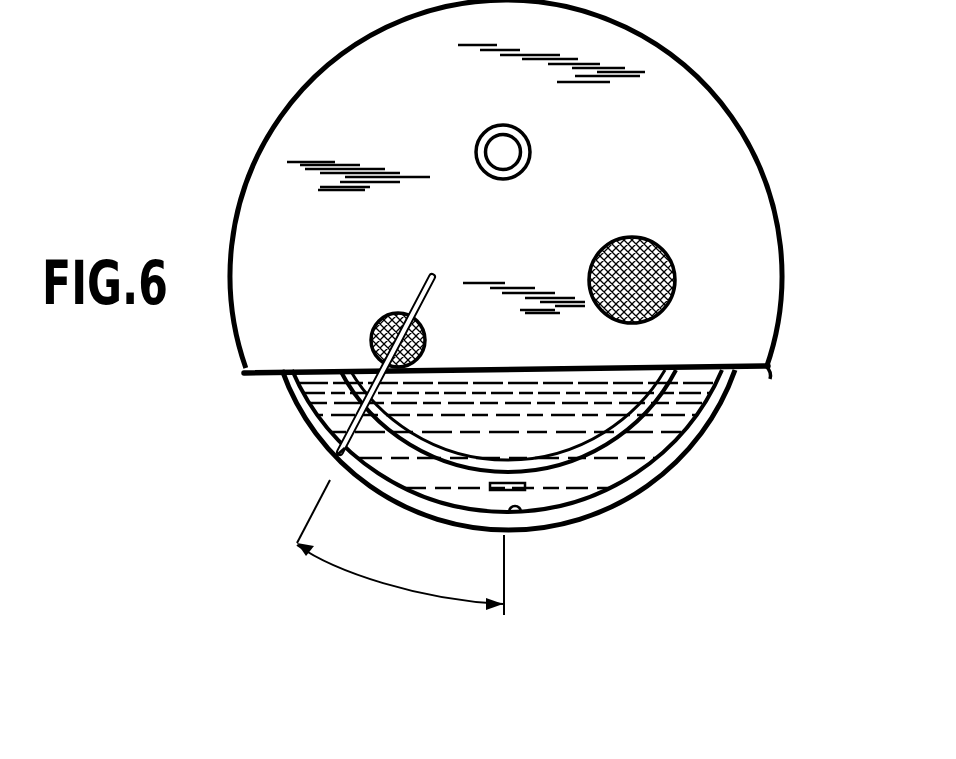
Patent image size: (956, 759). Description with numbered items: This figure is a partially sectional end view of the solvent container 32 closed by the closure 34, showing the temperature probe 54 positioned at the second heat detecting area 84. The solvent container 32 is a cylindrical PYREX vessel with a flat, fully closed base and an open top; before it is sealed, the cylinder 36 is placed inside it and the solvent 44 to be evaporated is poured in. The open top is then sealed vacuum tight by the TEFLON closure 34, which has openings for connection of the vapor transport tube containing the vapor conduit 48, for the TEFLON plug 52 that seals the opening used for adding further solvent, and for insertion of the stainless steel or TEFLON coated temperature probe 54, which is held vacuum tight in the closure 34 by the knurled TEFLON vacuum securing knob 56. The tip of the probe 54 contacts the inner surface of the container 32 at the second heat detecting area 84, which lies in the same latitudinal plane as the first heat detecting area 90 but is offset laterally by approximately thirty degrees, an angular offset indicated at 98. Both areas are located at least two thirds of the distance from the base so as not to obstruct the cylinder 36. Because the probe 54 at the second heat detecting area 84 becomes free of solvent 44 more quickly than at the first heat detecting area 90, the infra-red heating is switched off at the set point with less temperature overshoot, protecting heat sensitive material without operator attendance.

The solvent container 32 is at (694, 440).
The closure 34 is at (784, 240).
The cylinder 36 is at (690, 376).
The solvent 44 is at (477, 393).
The vapor conduit 48 is at (530, 158).
The plug 52 is at (676, 288).
The temperature probe 54 is at (418, 288).
The vacuum securing knob 56 is at (381, 324).
The second heat detecting area 84 is at (335, 452).
The first heat detecting area 90 is at (528, 518).
The angle 98 is at (400, 547).